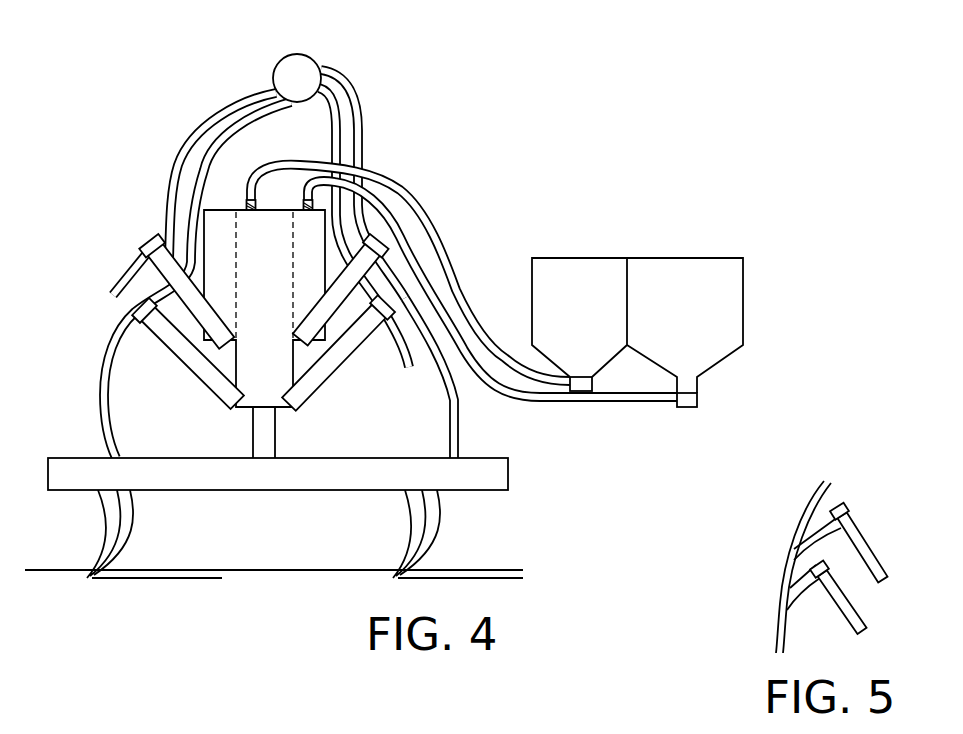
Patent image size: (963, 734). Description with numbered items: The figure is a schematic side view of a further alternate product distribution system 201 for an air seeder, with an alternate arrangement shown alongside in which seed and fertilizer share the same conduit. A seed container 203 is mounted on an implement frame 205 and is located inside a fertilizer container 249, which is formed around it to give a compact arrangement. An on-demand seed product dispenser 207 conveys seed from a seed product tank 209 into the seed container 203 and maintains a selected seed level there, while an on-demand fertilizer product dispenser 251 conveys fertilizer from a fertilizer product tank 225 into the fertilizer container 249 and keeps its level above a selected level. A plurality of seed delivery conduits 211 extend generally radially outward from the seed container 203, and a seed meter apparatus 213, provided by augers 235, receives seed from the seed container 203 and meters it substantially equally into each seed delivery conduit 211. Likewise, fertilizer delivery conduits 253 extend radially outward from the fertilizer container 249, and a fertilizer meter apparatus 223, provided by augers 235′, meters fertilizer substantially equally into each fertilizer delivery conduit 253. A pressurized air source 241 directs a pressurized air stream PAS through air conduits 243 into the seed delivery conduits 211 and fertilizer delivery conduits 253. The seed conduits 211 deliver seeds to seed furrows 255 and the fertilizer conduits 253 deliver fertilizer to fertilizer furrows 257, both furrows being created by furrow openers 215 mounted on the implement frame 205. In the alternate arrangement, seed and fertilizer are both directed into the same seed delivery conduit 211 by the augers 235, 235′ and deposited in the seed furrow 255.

In FIG. 4, the product distribution system 201 is at (577, 126).
In FIG. 4, the seed container 203 is at (295, 370).
In FIG. 4, the implement frame 205 is at (508, 490).
In FIG. 4, the on-demand seed product dispenser 207 is at (687, 408).
In FIG. 4, the seed product tank 209 is at (676, 258).
In FIG. 4, the seed delivery conduits 211 is at (102, 376).
In FIG. 5, the seed delivery conduits 211 is at (779, 598).
In FIG. 4, the seed meter apparatus 213 is at (230, 412).
In FIG. 4, the furrow openers 215 is at (98, 546).
In FIG. 4, the fertilizer meter apparatus 223 is at (340, 352).
In FIG. 4, the fertilizer product tank 225 is at (556, 258).
In FIG. 4, the augers 235 is at (192, 352).
In FIG. 5, the augers 235 is at (858, 604).
In FIG. 4, the augers 235′ is at (195, 262).
In FIG. 5, the augers 235′ is at (869, 540).
In FIG. 4, the pressurized air source 241 is at (299, 55).
In FIG. 4, the air conduits 243 is at (358, 82).
In FIG. 4, the fertilizer container 249 is at (221, 209).
In FIG. 4, the on-demand fertilizer product dispenser 251 is at (593, 388).
In FIG. 4, the fertilizer delivery conduits 253 is at (130, 268).
In FIG. 4, the seed furrows 255 is at (140, 570).
In FIG. 4, the fertilizer furrows 257 is at (442, 570).
In FIG. 4, the pressurized air stream PAS is at (207, 115).